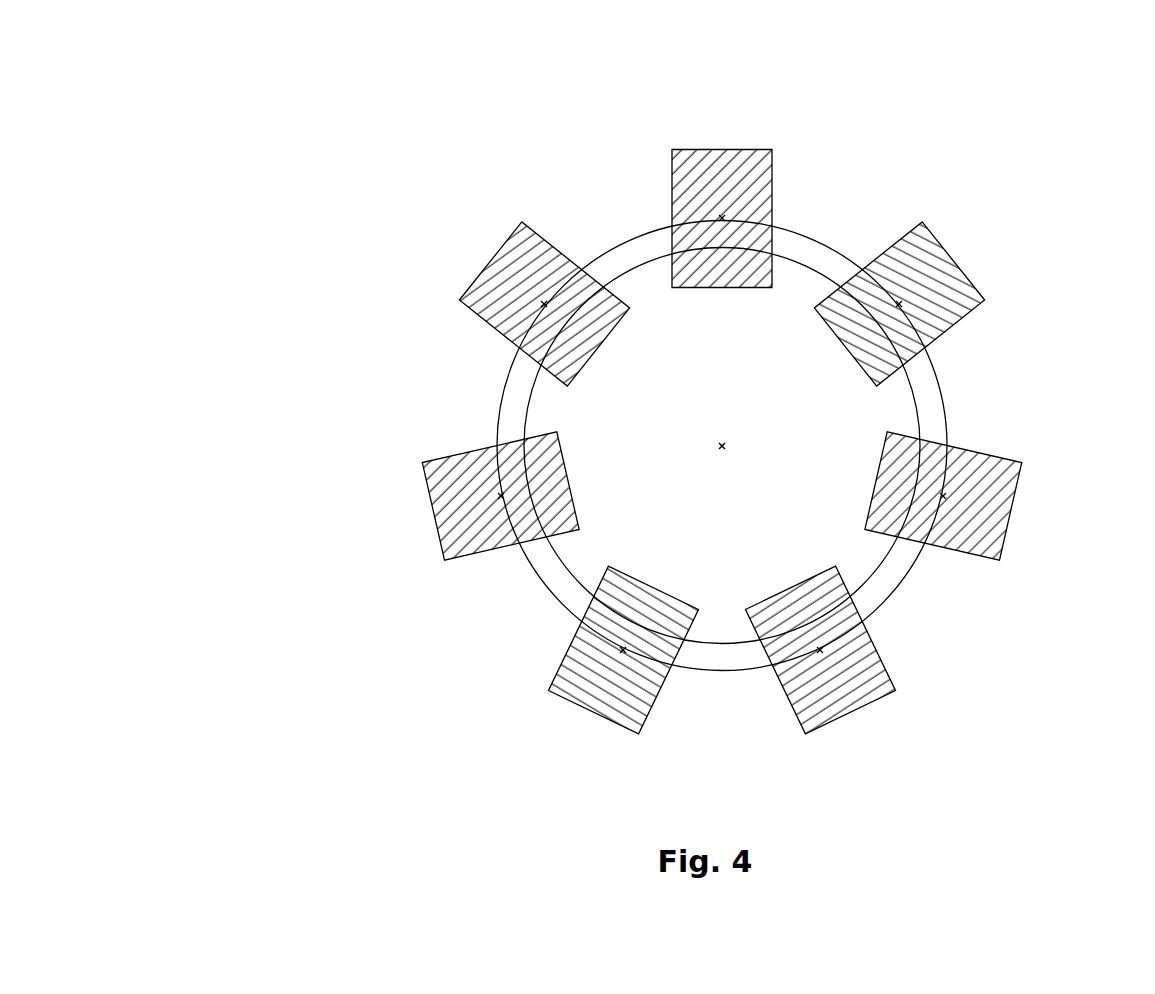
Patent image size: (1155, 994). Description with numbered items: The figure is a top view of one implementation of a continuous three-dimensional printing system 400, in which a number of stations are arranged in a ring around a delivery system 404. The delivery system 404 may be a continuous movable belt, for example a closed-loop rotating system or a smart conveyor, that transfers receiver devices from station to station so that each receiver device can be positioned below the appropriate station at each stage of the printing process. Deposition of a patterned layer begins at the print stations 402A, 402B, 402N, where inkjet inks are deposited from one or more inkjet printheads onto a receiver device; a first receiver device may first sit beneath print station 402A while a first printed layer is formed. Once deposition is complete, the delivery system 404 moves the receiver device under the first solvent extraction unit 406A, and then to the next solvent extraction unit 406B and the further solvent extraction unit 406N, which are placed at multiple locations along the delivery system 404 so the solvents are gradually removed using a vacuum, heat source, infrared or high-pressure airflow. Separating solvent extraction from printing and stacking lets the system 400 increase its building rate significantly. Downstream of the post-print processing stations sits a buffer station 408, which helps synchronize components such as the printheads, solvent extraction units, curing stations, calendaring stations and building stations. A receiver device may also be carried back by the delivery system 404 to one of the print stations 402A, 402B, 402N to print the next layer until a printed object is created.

The continuous 3D printing system 400 is at (262, 128).
The print station 402A is at (716, 149).
The print station 402B is at (477, 278).
The print station 402N is at (442, 537).
The delivery system 404 is at (497, 430).
The first solvent extraction unit 406A is at (598, 712).
The solvent extraction unit 406B is at (862, 710).
The solvent extraction unit 406N is at (1020, 483).
The buffer station 408 is at (945, 252).